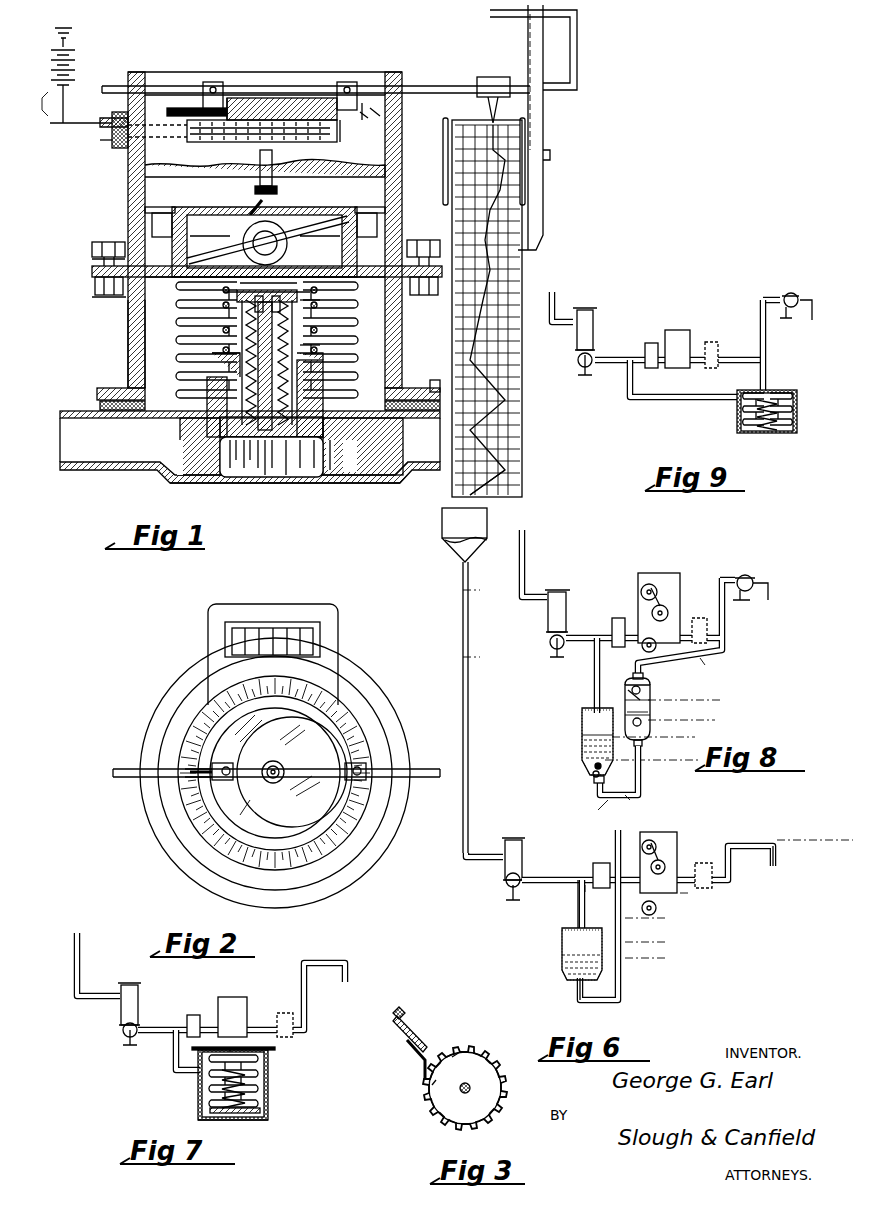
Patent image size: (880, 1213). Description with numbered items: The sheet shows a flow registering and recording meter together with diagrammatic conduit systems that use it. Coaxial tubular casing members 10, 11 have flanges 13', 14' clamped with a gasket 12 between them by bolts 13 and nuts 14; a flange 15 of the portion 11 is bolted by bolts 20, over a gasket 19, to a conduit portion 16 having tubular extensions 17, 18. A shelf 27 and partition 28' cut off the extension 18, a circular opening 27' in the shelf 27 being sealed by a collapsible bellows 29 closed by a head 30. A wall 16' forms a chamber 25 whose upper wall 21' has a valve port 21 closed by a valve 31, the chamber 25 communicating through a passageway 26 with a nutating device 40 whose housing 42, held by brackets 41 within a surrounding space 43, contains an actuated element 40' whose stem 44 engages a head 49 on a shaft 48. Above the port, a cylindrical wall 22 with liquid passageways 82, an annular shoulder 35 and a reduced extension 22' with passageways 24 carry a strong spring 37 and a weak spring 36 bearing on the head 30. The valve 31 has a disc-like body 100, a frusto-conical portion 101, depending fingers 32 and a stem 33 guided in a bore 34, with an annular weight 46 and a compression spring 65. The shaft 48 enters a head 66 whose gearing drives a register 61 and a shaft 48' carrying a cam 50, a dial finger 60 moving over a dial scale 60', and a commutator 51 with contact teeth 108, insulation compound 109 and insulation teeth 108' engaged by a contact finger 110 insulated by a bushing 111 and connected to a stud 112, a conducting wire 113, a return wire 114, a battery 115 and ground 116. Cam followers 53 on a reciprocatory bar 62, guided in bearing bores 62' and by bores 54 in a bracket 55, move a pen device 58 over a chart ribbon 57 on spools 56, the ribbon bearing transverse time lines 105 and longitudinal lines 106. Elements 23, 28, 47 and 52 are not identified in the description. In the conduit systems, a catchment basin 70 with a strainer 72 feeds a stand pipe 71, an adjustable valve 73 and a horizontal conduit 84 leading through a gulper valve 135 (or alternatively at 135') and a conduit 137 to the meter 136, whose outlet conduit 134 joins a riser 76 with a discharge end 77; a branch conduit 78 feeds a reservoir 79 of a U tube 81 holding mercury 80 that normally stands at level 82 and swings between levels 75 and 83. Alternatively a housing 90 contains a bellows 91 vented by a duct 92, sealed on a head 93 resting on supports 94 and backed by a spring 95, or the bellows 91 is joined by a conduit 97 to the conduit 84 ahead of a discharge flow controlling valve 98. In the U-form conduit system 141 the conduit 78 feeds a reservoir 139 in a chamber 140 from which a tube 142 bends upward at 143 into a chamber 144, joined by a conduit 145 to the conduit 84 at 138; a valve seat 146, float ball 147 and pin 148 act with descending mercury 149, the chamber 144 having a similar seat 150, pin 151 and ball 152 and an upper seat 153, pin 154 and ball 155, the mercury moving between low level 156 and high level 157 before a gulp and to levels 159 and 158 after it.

In FIG. 1, the tubular casing member 10 is at (128, 156).
In FIG. 1, the tubular casing member 11 is at (128, 330).
In FIG. 1, the gasket 12 is at (92, 272).
In FIG. 1, the bolts 13 is at (247, 236).
In FIG. 1, the flange 13' is at (90, 258).
In FIG. 1, the nuts 14 is at (247, 302).
In FIG. 1, the flange 14' is at (87, 300).
In FIG. 1, the flange 15 is at (105, 392).
In FIG. 1, the conduit portion 16 is at (285, 499).
In FIG. 1, the wall 16' is at (346, 455).
In FIG. 1, the tubular extension 17 is at (100, 470).
In FIG. 1, the tubular extension 18 is at (412, 475).
In FIG. 1, the gasket 19 is at (100, 405).
In FIG. 1, the bolts 20 is at (432, 380).
In FIG. 1, the valve port 21 is at (247, 477).
In FIG. 1, the upper wall 21' is at (307, 454).
In FIG. 1, the cylindrical wall 22 is at (341, 340).
In FIG. 1, the cylindrical wall extension 22' is at (192, 338).
In FIG. 1, the spring 23 is at (287, 362).
In FIG. 1, the passageways 24 is at (255, 362).
In FIG. 1, the chamber 25 is at (286, 474).
In FIG. 1, the passageway 26 is at (323, 425).
In FIG. 1, the shelf 27 is at (250, 436).
In FIG. 1, the circular opening 27' is at (374, 456).
In FIG. 1, the valve body 28 is at (278, 428).
In FIG. 1, the partition 28' is at (190, 457).
In FIG. 1, the collapsible bellows 29 is at (224, 350).
In FIG. 1, the head 30 is at (348, 292).
In FIG. 1, the valve 31 is at (256, 454).
In FIG. 1, the depending fingers 32 is at (266, 470).
In FIG. 1, the stem 33 is at (224, 304).
In FIG. 1, the bore 34 is at (267, 301).
In FIG. 1, the annular shoulder 35 is at (212, 362).
In FIG. 1, the compression spring 36 is at (318, 345).
In FIG. 1, the compression spring 37 is at (330, 313).
In FIG. 1, the nutating device 40 is at (264, 229).
In FIG. 1, the actuated movable element 40' is at (268, 240).
In FIG. 1, the brackets 41 is at (160, 207).
In FIG. 1, the housing 42 is at (342, 243).
In FIG. 1, the space 43 is at (152, 225).
In FIG. 1, the stem 44 is at (258, 196).
In FIG. 1, the annular weight 46 is at (318, 437).
In FIG. 1, the pin 47 is at (350, 116).
In FIG. 1, the rotatable shaft 48 is at (258, 165).
In FIG. 3, the rotatable shaft 48 is at (476, 1093).
In FIG. 1, the shaft 48' is at (265, 128).
In FIG. 1, the head 49 is at (278, 192).
In FIG. 1, the cam 50 is at (318, 98).
In FIG. 2, the cam 50 is at (255, 752).
In FIG. 1, the commutator 51 is at (210, 138).
In FIG. 3, the commutator 51 is at (492, 1062).
In FIG. 1, the gear 52 is at (300, 126).
In FIG. 1, the cam followers 53 is at (215, 84).
In FIG. 2, the cam followers 53 is at (222, 780).
In FIG. 1, the bores 54 is at (530, 24).
In FIG. 1, the bracket 55 is at (543, 240).
In FIG. 1, the spools 56 is at (443, 160).
In FIG. 1, the chart 57 is at (522, 333).
In FIG. 1, the pen device 58 is at (495, 78).
In FIG. 1, the dial finger 60 is at (197, 79).
In FIG. 2, the dial finger 60 is at (187, 794).
In FIG. 2, the dial scale 60' is at (275, 766).
In FIG. 2, the registering dial mechanism 61 is at (320, 640).
In FIG. 1, the reciprocatory bar 62 is at (316, 68).
In FIG. 2, the reciprocatory bar 62 is at (280, 760).
In FIG. 1, the bearing bores 62' is at (261, 75).
In FIG. 1, the compression spring 65 is at (278, 454).
In FIG. 1, the head 66 is at (385, 116).
In FIG. 8, the catchment basin 70 is at (480, 518).
In FIG. 8, the stand pipe 71 is at (470, 680).
In FIG. 8, the strainer 72 is at (478, 548).
In FIG. 9, the adjustable valve 73 is at (580, 360).
In FIG. 8, the adjustable valve 73 is at (548, 632).
In FIG. 6, the adjustable valve 73 is at (505, 862).
In FIG. 6, the level 75 is at (642, 907).
In FIG. 6, the riser 76 is at (731, 861).
In FIG. 6, the discharge end 77 is at (777, 840).
In FIG. 9, the branch conduit 78 is at (628, 390).
In FIG. 8, the branch conduit 78 is at (594, 692).
In FIG. 6, the branch conduit 78 is at (578, 905).
In FIG. 7, the branch conduit 78 is at (174, 1055).
In FIG. 6, the reservoir 79 is at (570, 946).
In FIG. 6, the mercury 80 is at (562, 965).
In FIG. 6, the U tube 81 is at (621, 985).
In FIG. 1, the liquid passageways 82 is at (207, 420).
In FIG. 6, the liquid passageways 82 is at (650, 960).
In FIG. 6, the level 83 is at (632, 942).
In FIG. 9, the horizontal conduit 84 is at (625, 356).
In FIG. 8, the horizontal conduit 84 is at (722, 578).
In FIG. 6, the horizontal conduit 84 is at (572, 877).
In FIG. 7, the horizontal conduit 84 is at (160, 1027).
In FIG. 9, the housing 90 is at (737, 425).
In FIG. 7, the housing 90 is at (200, 1085).
In FIG. 9, the collapsible bellows 91 is at (795, 413).
In FIG. 7, the collapsible bellows 91 is at (260, 1082).
In FIG. 7, the duct 92 is at (236, 1050).
In FIG. 7, the head 93 is at (260, 1110).
In FIG. 7, the supports 94 is at (255, 1118).
In FIG. 9, the compression spring 95 is at (770, 428).
In FIG. 7, the compression spring 95 is at (245, 1072).
In FIG. 9, the conduit 97 is at (767, 370).
In FIG. 9, the discharge flow controlling valve 98 is at (795, 310).
In FIG. 8, the discharge flow controlling valve 98 is at (745, 592).
In FIG. 1, the disc-like body 100 is at (227, 456).
In FIG. 1, the frusto-conical portion 101 is at (246, 457).
In FIG. 1, the transverse lines 105 is at (505, 398).
In FIG. 1, the longitudinal lines 106 is at (520, 452).
In FIG. 3, the contact teeth 108 is at (459, 1102).
In FIG. 3, the insulation teeth 108' is at (464, 1042).
In FIG. 3, the insulation compound 109 is at (436, 1070).
In FIG. 1, the contact finger 110 is at (228, 120).
In FIG. 3, the contact finger 110 is at (424, 1078).
In FIG. 1, the insulating bushing 111 is at (110, 118).
In FIG. 3, the insulating bushing 111 is at (420, 1036).
In FIG. 1, the stud 112 is at (112, 138).
In FIG. 3, the stud 112 is at (400, 1012).
In FIG. 1, the conducting wire 113 is at (70, 124).
In FIG. 1, the return wire 114 is at (52, 104).
In FIG. 1, the battery 115 is at (76, 60).
In FIG. 1, the ground 116 is at (70, 40).
In FIG. 6, the ground 116 is at (597, 904).
In FIG. 6, the outlet conduit 134 is at (680, 893).
In FIG. 9, the gulper valve 135 is at (693, 361).
In FIG. 8, the gulper valve 135 is at (615, 618).
In FIG. 6, the gulper valve 135 is at (602, 865).
In FIG. 7, the gulper valve 135 is at (201, 1009).
In FIG. 9, the valve 135' is at (711, 355).
In FIG. 8, the valve 135' is at (692, 620).
In FIG. 6, the valve 135' is at (699, 866).
In FIG. 7, the valve 135' is at (287, 1015).
In FIG. 9, the meter 136 is at (685, 340).
In FIG. 8, the meter 136 is at (665, 575).
In FIG. 6, the meter 136 is at (668, 832).
In FIG. 7, the meter 136 is at (240, 1012).
In FIG. 6, the conduit 137 is at (625, 860).
In FIG. 8, the junction 138 is at (726, 646).
In FIG. 8, the reservoir 139 is at (582, 720).
In FIG. 8, the enlarged chamber portion 140 is at (582, 736).
In FIG. 8, the U-form conduit system 141 is at (595, 810).
In FIG. 8, the tube 142 is at (645, 804).
In FIG. 8, the upward bend 143 is at (641, 785).
In FIG. 8, the enlarged portion 144 is at (650, 704).
In FIG. 8, the conduit 145 is at (719, 665).
In FIG. 8, the valve seat 146 is at (594, 782).
In FIG. 8, the float ball 147 is at (592, 775).
In FIG. 8, the pin 148 is at (595, 766).
In FIG. 8, the mercury 149 is at (584, 750).
In FIG. 8, the valve seat 150 is at (642, 743).
In FIG. 8, the pin 151 is at (650, 716).
In FIG. 8, the float ball valve 152 is at (641, 724).
In FIG. 8, the valve seat 153 is at (643, 677).
In FIG. 8, the pin 154 is at (632, 694).
In FIG. 8, the ball 155 is at (650, 690).
In FIG. 8, the low level 156 is at (680, 763).
In FIG. 8, the high level 157 is at (723, 700).
In FIG. 8, the level 158 is at (715, 720).
In FIG. 8, the level 159 is at (665, 742).